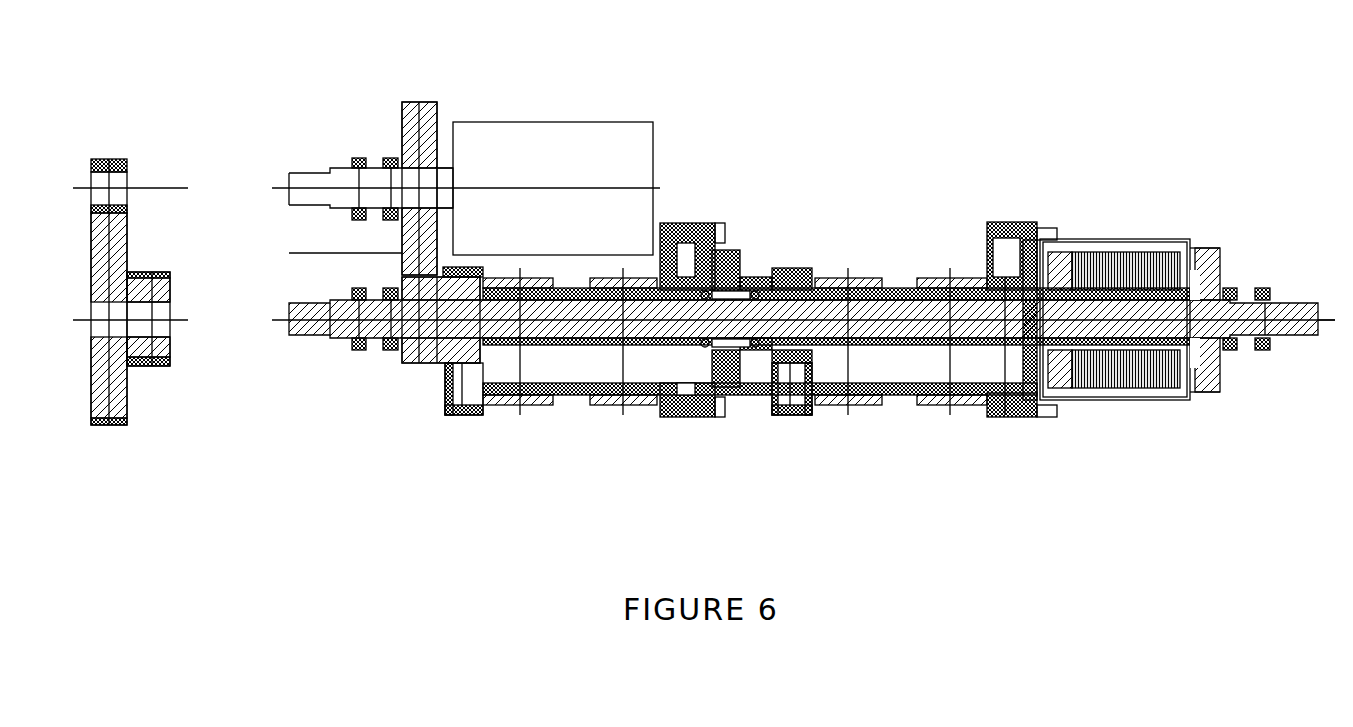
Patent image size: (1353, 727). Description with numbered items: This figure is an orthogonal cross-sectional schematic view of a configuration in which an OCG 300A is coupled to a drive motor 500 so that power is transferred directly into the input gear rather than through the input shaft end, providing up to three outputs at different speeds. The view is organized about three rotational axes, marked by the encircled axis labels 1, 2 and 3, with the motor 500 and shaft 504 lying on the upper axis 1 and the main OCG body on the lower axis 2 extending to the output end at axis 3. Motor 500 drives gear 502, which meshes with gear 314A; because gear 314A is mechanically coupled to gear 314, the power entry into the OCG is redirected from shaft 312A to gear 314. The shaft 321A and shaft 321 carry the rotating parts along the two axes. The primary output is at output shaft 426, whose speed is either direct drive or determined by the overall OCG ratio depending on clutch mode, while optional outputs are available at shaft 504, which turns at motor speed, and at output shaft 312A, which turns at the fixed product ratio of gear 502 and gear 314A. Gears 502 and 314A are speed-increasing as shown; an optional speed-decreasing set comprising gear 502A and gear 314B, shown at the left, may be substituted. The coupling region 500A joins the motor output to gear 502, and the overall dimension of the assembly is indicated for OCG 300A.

The first axis 1 is at (436, 188).
The second axis 2 is at (774, 320).
The third axis 3 is at (1308, 276).
The gear 502A is at (108, 160).
The drive shaft 321A is at (317, 144).
The shaft 504 is at (308, 183).
The gear 502 is at (418, 100).
The motor output coupling 500A is at (455, 122).
The drive motor 500 is at (553, 122).
The gear 314B is at (110, 425).
The gear 314 is at (150, 362).
The main shaft 321 is at (775, 383).
The output shaft 312A is at (310, 336).
The gear 314A is at (418, 365).
The output shaft 426 is at (1295, 336).
The OCG 300A is at (802, 442).